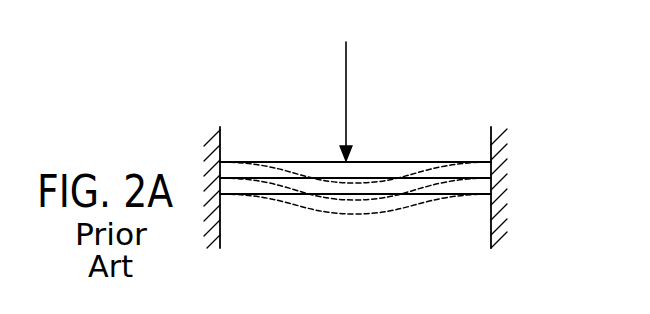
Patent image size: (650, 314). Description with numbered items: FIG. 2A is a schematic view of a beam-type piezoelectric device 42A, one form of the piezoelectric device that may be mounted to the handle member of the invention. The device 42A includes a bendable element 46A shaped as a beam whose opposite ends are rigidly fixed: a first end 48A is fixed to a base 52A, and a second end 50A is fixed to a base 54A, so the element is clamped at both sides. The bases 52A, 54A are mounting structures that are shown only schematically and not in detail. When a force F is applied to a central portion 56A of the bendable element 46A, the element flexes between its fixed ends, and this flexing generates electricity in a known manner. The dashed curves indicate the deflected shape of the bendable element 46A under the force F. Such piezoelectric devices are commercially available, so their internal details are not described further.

The beam-type piezoelectric device 42A is at (370, 153).
The bendable element 46A is at (297, 162).
The first end 48A is at (212, 177).
The second end 50A is at (505, 179).
The base 52A is at (220, 228).
The base 54A is at (490, 215).
The central portion 56A is at (367, 160).
The force F is at (337, 101).